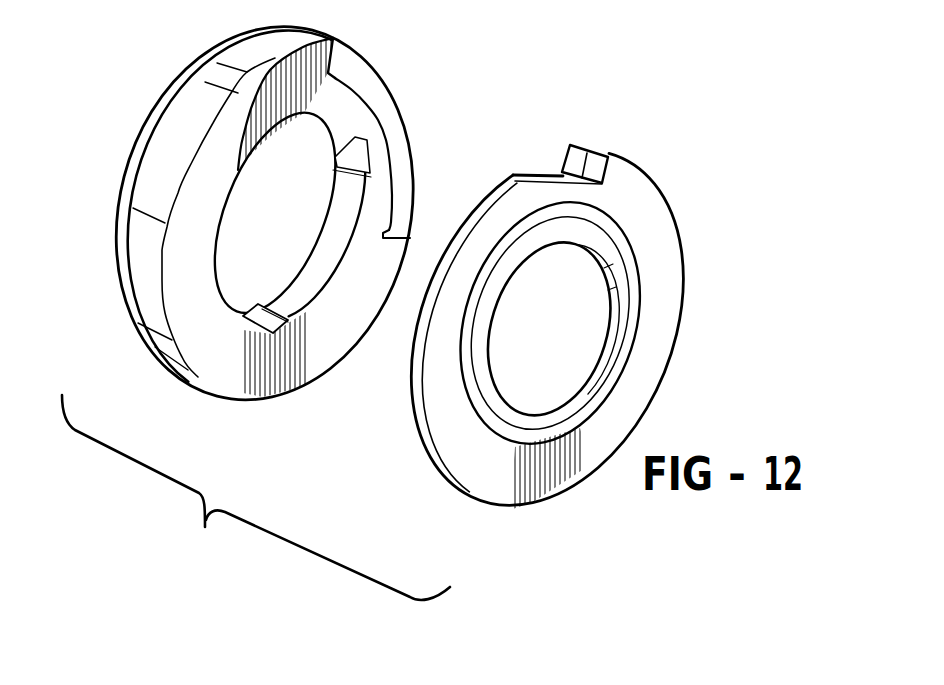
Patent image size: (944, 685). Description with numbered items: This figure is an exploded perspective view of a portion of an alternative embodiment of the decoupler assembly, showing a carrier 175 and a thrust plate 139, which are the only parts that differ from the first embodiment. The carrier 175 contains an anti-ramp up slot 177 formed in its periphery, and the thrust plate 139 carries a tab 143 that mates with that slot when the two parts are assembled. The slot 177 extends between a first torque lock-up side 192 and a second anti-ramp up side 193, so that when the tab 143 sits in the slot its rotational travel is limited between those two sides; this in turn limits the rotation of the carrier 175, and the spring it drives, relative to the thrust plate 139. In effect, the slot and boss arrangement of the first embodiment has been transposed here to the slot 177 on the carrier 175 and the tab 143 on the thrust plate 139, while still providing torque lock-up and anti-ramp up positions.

The carrier 175 is at (281, 221).
The thrust plate 139 is at (525, 300).
The first torque lock-up side 192 is at (330, 62).
The anti-ramp up slot 177 is at (377, 80).
The second anti-ramp up side 193 is at (405, 225).
The tab 143 is at (565, 150).